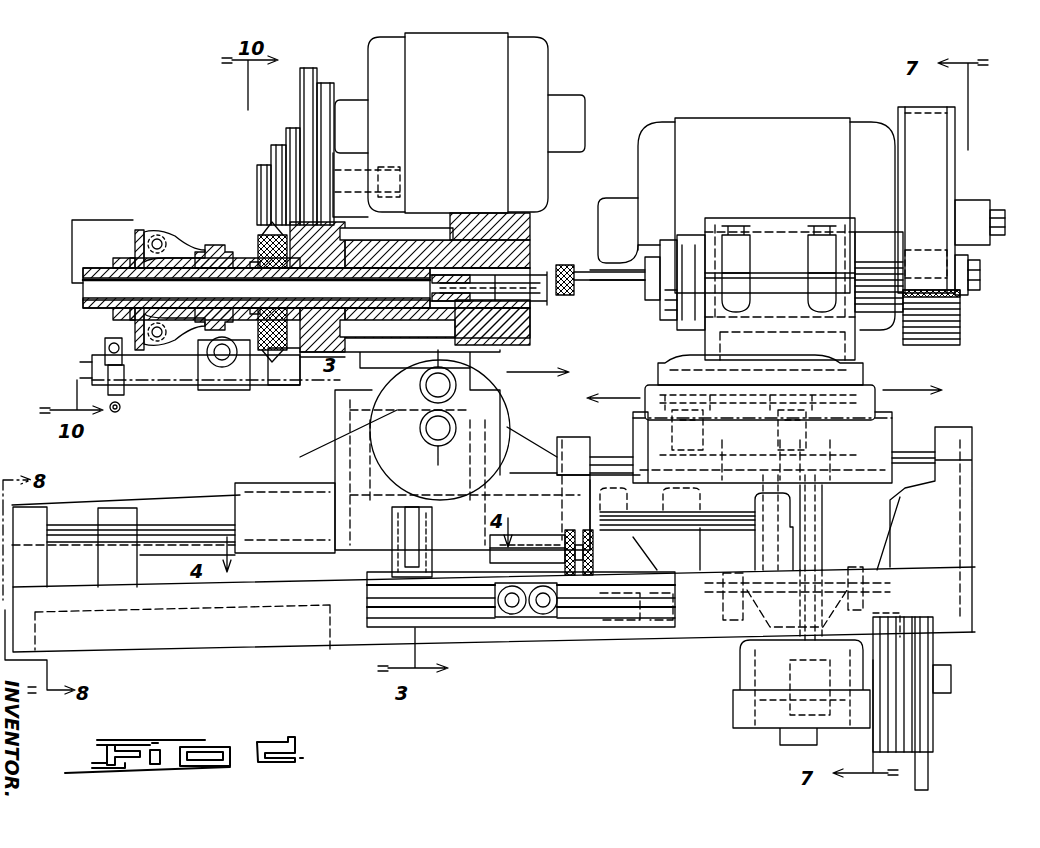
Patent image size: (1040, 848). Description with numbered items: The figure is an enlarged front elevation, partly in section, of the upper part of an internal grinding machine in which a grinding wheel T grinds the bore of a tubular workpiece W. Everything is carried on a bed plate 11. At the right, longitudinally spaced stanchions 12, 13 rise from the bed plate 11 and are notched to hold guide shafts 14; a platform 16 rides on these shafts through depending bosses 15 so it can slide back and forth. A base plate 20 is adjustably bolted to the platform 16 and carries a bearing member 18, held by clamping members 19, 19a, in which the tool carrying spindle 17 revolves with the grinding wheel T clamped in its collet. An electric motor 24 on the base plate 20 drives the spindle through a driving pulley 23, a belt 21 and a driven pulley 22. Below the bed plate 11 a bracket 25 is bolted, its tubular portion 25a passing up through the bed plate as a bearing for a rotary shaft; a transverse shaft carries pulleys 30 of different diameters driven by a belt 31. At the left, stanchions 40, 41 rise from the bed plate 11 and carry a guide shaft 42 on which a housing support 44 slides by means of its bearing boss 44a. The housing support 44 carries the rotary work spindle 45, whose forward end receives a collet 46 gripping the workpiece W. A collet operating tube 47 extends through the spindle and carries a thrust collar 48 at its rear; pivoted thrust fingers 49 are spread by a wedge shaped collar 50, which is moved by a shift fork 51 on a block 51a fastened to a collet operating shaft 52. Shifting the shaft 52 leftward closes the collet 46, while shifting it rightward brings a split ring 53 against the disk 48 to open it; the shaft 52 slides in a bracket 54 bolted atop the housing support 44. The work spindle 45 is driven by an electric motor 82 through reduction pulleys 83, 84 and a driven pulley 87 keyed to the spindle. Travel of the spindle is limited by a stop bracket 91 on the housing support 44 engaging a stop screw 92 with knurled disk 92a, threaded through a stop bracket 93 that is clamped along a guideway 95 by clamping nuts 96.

The bed plate 11 is at (212, 640).
The stanchions 12 is at (962, 492).
The stanchions 13 is at (565, 445).
The guide shafts 14 is at (945, 432).
The bosses 15 is at (900, 435).
The platform 16 is at (880, 412).
The tool carrying spindle 17 is at (660, 300).
The bearing member 18 is at (864, 232).
The clamping member 19 is at (782, 235).
The clamping member 19a is at (790, 312).
The base plate 20 is at (862, 375).
The belt 21 is at (945, 180).
The driven pulley 22 is at (982, 258).
The driving pulley 23 is at (965, 320).
The electric motor 24 is at (772, 186).
The bracket 25 is at (740, 674).
The tubular portion 25a is at (822, 514).
The pulleys 30 is at (880, 680).
The belt 31 is at (925, 750).
The stanchions 40 is at (90, 580).
The stanchions 41 is at (755, 554).
The guide shaft 42 is at (85, 505).
The housing support 44 is at (335, 455).
The bearing boss 44a is at (250, 482).
The work spindle 45 is at (268, 240).
The collet 46 is at (528, 250).
The collet operating tube 47 is at (92, 268).
The thrust collar 48 is at (130, 238).
The thrust fingers 49 is at (170, 232).
The wedge shaped collar 50 is at (215, 246).
The shift fork 51 is at (190, 350).
The block 51a is at (207, 390).
The collet operating shaft 52 is at (145, 385).
The split ring 53 is at (86, 388).
The bracket 54 is at (278, 382).
The electric motor 82 is at (468, 126).
The pulley 83 is at (306, 70).
The pulley 84 is at (282, 132).
The driven pulley 87 is at (258, 235).
The stop bracket 91 is at (400, 560).
The stop screw 92 is at (582, 575).
The knurled disk 92a is at (593, 558).
The stop bracket 93 is at (527, 545).
The guideway 95 is at (470, 605).
The clamping nuts 96 is at (540, 614).
The workpiece W is at (557, 266).
The grinding wheel T is at (588, 290).